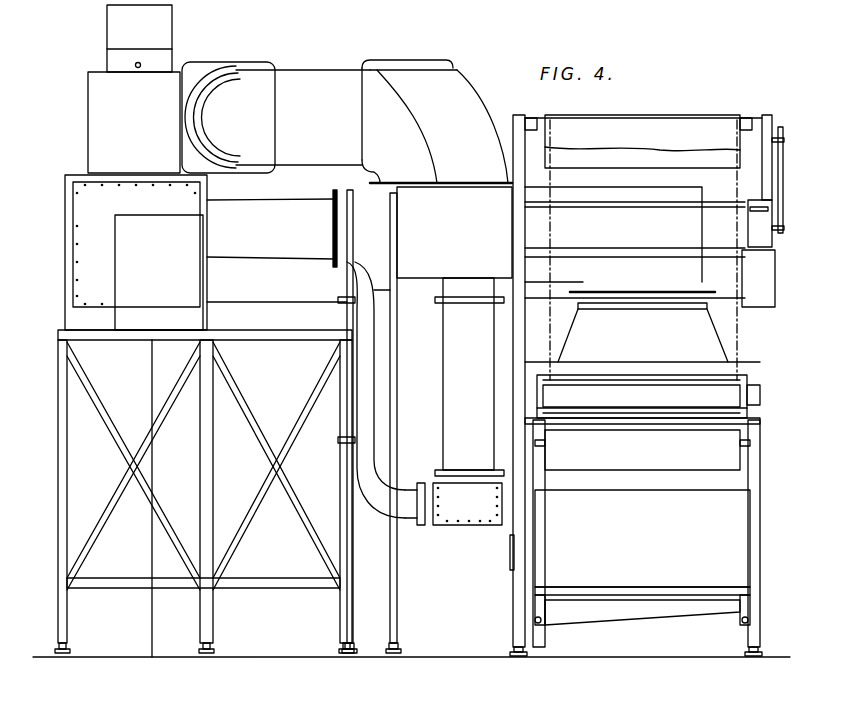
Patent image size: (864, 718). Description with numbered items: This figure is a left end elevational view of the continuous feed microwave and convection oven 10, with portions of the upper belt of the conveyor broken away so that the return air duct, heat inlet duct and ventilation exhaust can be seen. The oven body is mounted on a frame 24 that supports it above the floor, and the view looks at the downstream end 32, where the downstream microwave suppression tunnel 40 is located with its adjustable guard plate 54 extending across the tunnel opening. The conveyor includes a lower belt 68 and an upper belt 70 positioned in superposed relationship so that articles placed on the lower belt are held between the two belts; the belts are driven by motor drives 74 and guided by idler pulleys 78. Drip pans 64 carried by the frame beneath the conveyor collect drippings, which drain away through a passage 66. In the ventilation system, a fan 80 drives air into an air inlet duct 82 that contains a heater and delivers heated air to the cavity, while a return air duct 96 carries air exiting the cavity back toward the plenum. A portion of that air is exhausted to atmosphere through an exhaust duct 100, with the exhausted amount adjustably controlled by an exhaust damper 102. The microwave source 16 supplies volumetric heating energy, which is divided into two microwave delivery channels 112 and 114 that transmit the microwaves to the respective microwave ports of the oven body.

The continuous feed microwave and convection oven 10 is at (693, 98).
The microwave source 16 is at (445, 540).
The frame 24 is at (62, 396).
The downstream end 32 is at (620, 380).
The microwave suppression tunnel 40 is at (705, 375).
The guard plate 54 is at (575, 380).
The drip pans 64 is at (725, 550).
The passage 66 is at (538, 628).
The lower belt 68 is at (715, 455).
The upper belt 70 is at (720, 120).
The motor drives 74 is at (762, 272).
The idler pulleys 78 is at (740, 390).
The fan 80 is at (203, 200).
The air inlet duct 82 is at (280, 250).
The return air duct 96 is at (700, 327).
The exhaust duct 100 is at (108, 16).
The exhaust damper 102 is at (166, 58).
The microwave delivery channel 112 is at (365, 397).
The microwave delivery channel 114 is at (456, 354).